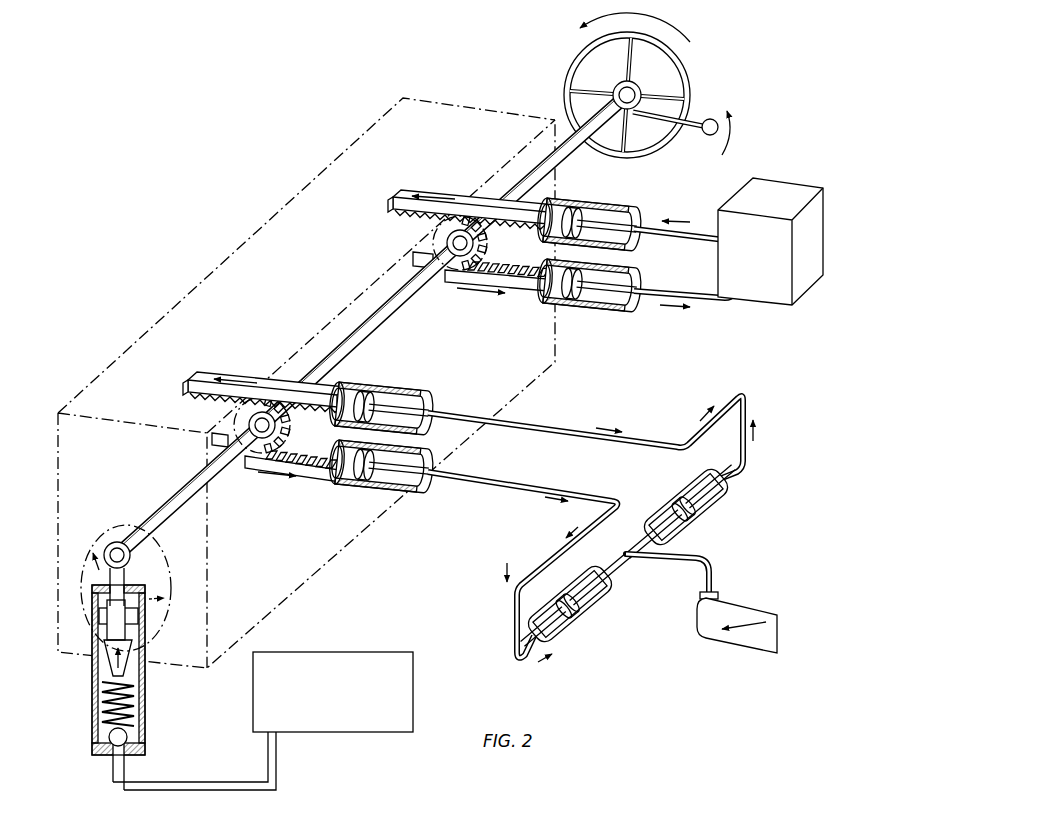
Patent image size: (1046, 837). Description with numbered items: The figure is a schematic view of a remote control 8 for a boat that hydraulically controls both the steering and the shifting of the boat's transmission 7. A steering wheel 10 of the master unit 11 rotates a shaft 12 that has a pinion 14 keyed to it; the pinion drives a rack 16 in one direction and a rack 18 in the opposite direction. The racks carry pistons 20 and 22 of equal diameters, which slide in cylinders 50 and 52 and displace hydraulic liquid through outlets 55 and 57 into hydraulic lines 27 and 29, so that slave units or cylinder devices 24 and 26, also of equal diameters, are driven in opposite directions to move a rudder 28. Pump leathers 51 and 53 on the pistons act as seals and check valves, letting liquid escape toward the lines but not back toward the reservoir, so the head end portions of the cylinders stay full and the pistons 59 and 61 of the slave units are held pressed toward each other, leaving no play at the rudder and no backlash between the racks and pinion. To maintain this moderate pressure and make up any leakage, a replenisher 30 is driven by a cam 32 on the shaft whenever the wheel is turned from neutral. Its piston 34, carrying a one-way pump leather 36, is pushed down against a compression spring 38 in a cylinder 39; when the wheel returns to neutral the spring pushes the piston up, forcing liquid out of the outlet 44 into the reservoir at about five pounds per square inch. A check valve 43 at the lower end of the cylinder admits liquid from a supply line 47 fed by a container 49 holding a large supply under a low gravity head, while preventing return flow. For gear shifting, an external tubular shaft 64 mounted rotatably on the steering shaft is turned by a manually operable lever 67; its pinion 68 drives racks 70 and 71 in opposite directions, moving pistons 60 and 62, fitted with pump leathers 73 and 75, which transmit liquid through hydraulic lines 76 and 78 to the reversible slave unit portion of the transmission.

The transmission 7 is at (826, 224).
The remote control 8 is at (301, 162).
The steering wheel 10 is at (574, 56).
The master unit 11 is at (147, 333).
The shaft 12 is at (187, 479).
The pinion 14 is at (246, 421).
The rack 16 is at (228, 378).
The rack 18 is at (328, 470).
The piston 20 is at (396, 395).
The piston 22 is at (403, 496).
The slave unit 24 is at (696, 531).
The slave unit 26 is at (590, 618).
The hydraulic line 27 is at (553, 423).
The rudder 28 is at (781, 619).
The hydraulic line 29 is at (525, 461).
The replenisher 30 is at (151, 723).
The cam 32 is at (138, 561).
The piston 34 is at (134, 662).
The pump leather 36 is at (139, 625).
The compression spring 38 is at (100, 701).
The cylinder 39 is at (98, 730).
The check valve 43 is at (110, 768).
The outlet 44 is at (152, 601).
The supply line 47 is at (204, 795).
The container 49 is at (368, 735).
The cylinder 50 is at (401, 395).
The pump leather 51 is at (363, 393).
The cylinder 52 is at (386, 488).
The pump leather 53 is at (372, 481).
The outlet 55 is at (440, 413).
The outlet 57 is at (410, 491).
The piston 59 is at (712, 519).
The piston 60 is at (591, 210).
The piston 61 is at (612, 598).
The piston 62 is at (587, 304).
The tubular shaft 64 is at (569, 124).
The lever 67 is at (687, 137).
The pinion 68 is at (444, 242).
The rack 70 is at (438, 196).
The rack 71 is at (454, 284).
The pump leather 73 is at (572, 209).
The pump leather 75 is at (563, 306).
The hydraulic line 76 is at (683, 245).
The hydraulic line 78 is at (680, 291).